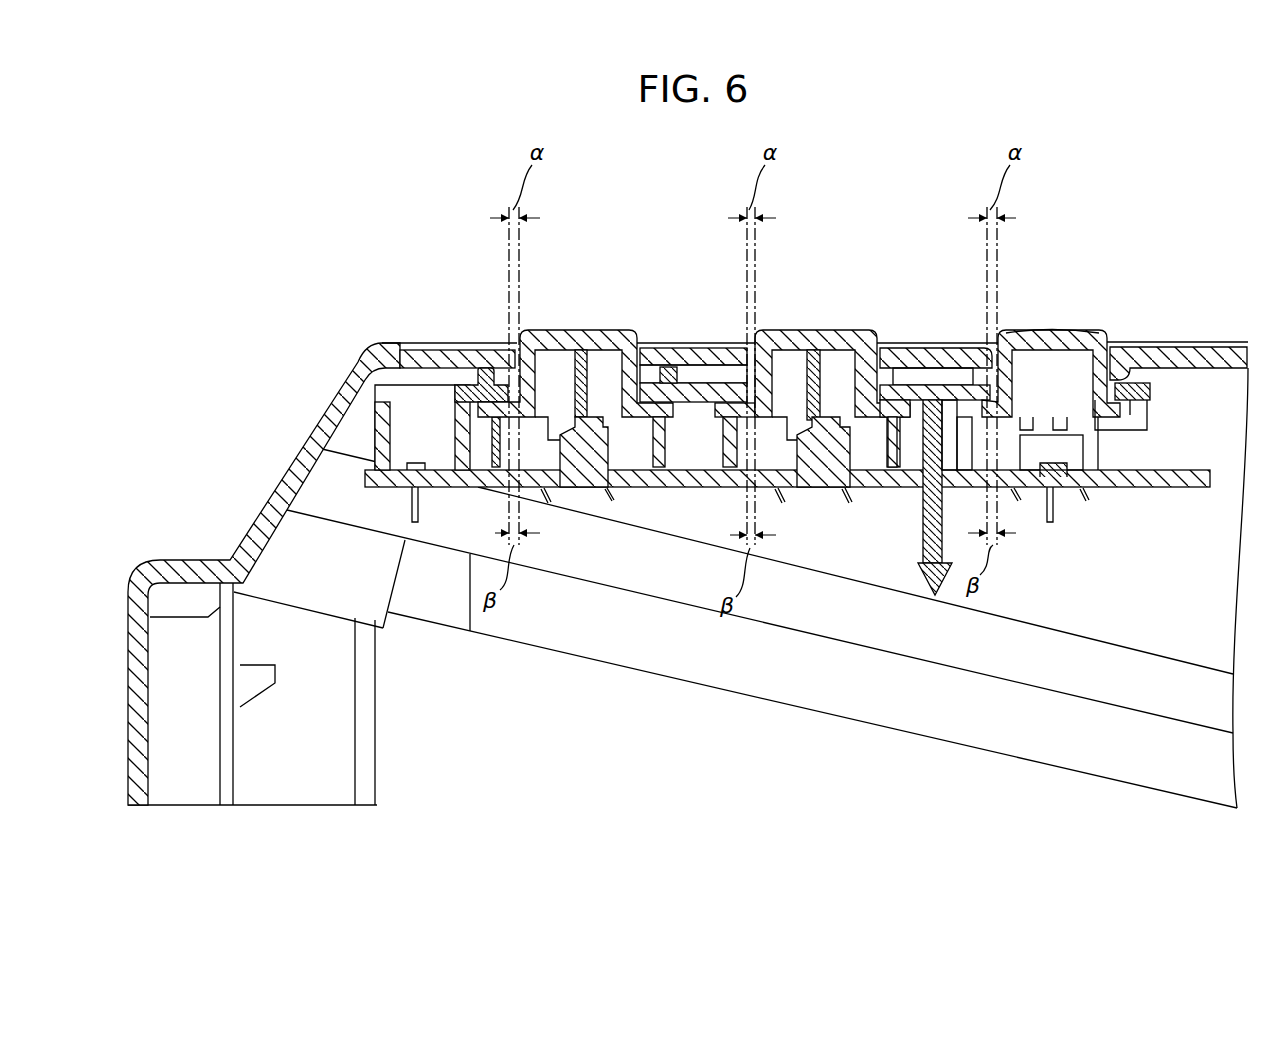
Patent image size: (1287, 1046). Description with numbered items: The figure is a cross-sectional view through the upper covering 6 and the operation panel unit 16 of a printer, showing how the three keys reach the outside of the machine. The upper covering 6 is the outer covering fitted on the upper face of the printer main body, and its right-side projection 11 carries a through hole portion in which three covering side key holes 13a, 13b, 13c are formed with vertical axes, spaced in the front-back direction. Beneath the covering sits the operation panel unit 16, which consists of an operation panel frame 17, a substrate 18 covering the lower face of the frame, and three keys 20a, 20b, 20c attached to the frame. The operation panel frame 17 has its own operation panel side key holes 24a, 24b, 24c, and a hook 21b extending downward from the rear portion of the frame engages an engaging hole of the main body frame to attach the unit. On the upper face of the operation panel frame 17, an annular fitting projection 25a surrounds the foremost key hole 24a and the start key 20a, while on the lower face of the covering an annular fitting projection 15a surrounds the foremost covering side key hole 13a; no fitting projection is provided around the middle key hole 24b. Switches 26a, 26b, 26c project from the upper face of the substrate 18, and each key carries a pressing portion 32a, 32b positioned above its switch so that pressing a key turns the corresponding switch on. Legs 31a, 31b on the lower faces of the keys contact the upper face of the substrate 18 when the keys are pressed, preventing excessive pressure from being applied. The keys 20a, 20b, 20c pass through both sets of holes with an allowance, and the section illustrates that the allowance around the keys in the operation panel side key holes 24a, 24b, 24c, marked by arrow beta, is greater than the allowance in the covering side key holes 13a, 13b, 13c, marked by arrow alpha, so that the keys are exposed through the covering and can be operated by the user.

The upper covering 6 is at (445, 338).
The projection 11 is at (1222, 343).
The covering side key hole 13a is at (495, 372).
The covering side key hole 13b is at (672, 368).
The covering side key hole 13c is at (1045, 385).
The fitting projection 15a is at (622, 490).
The operation panel unit 16 is at (1160, 380).
The operation panel frame 17 is at (684, 345).
The substrate 18 is at (690, 604).
The key 20a is at (617, 328).
The key 20b is at (855, 328).
The key 20c is at (1090, 328).
The hook 21b is at (932, 600).
The operation panel side key hole 24a is at (570, 475).
The operation panel side key hole 24b is at (808, 475).
The operation panel side key hole 24c is at (1044, 478).
The fitting projection 25a is at (485, 368).
The switch 26a is at (550, 442).
The switch 26b is at (790, 442).
The switch 26c is at (1062, 452).
The leg 31a is at (478, 474).
The leg 31b is at (734, 474).
The pressing portion 32a is at (585, 330).
The pressing portion 32b is at (818, 420).